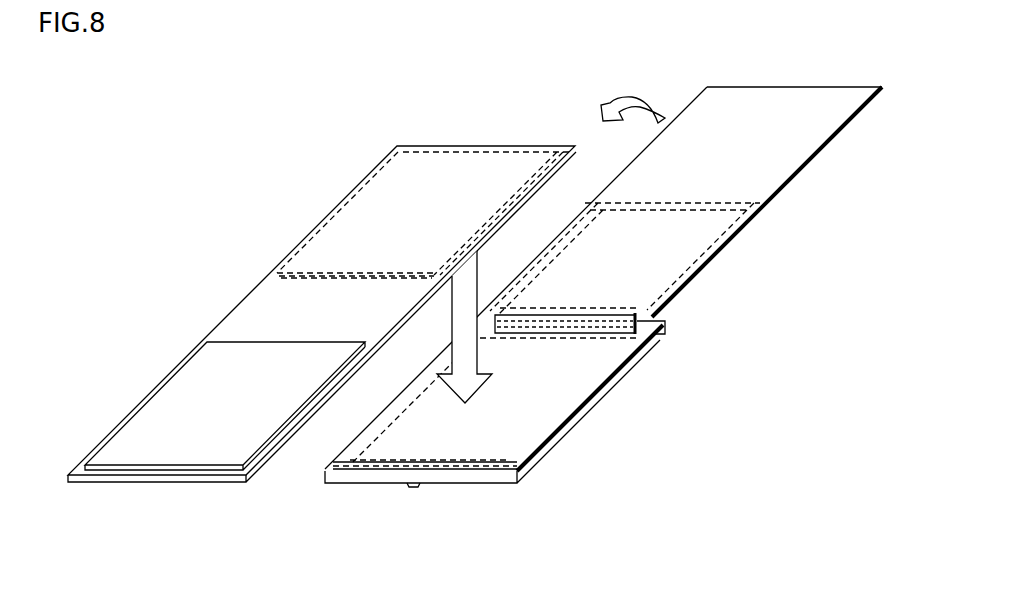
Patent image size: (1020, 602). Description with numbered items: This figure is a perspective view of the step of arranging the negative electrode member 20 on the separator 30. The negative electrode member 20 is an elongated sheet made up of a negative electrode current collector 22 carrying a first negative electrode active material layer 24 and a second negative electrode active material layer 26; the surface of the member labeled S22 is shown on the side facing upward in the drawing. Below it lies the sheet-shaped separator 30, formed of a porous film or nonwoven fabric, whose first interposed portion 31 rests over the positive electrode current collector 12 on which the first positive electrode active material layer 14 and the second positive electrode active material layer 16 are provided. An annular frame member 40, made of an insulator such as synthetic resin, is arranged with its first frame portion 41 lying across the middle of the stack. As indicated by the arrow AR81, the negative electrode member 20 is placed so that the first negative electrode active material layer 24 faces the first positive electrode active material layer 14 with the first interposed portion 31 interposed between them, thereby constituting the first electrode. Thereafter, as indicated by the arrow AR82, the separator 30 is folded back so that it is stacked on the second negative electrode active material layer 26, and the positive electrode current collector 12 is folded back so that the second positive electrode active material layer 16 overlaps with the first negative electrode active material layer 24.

The negative electrode member 20 is at (322, 306).
The negative electrode current collector 22 is at (314, 225).
The first negative electrode active material layer 24 is at (347, 247).
The surface of substrate S22 is at (252, 328).
The second negative electrode active material layer 26 is at (187, 403).
The separator 30 is at (609, 287).
The positive electrode current collector 12 is at (718, 198).
The second positive electrode active material layer 16 is at (672, 260).
The frame member 40 is at (617, 373).
The first frame portion 41 is at (667, 324).
The first interposed portion 31 is at (545, 408).
The first positive electrode active material layer 14 is at (512, 445).
The arrow AR81 is at (465, 283).
The arrow AR82 is at (637, 93).